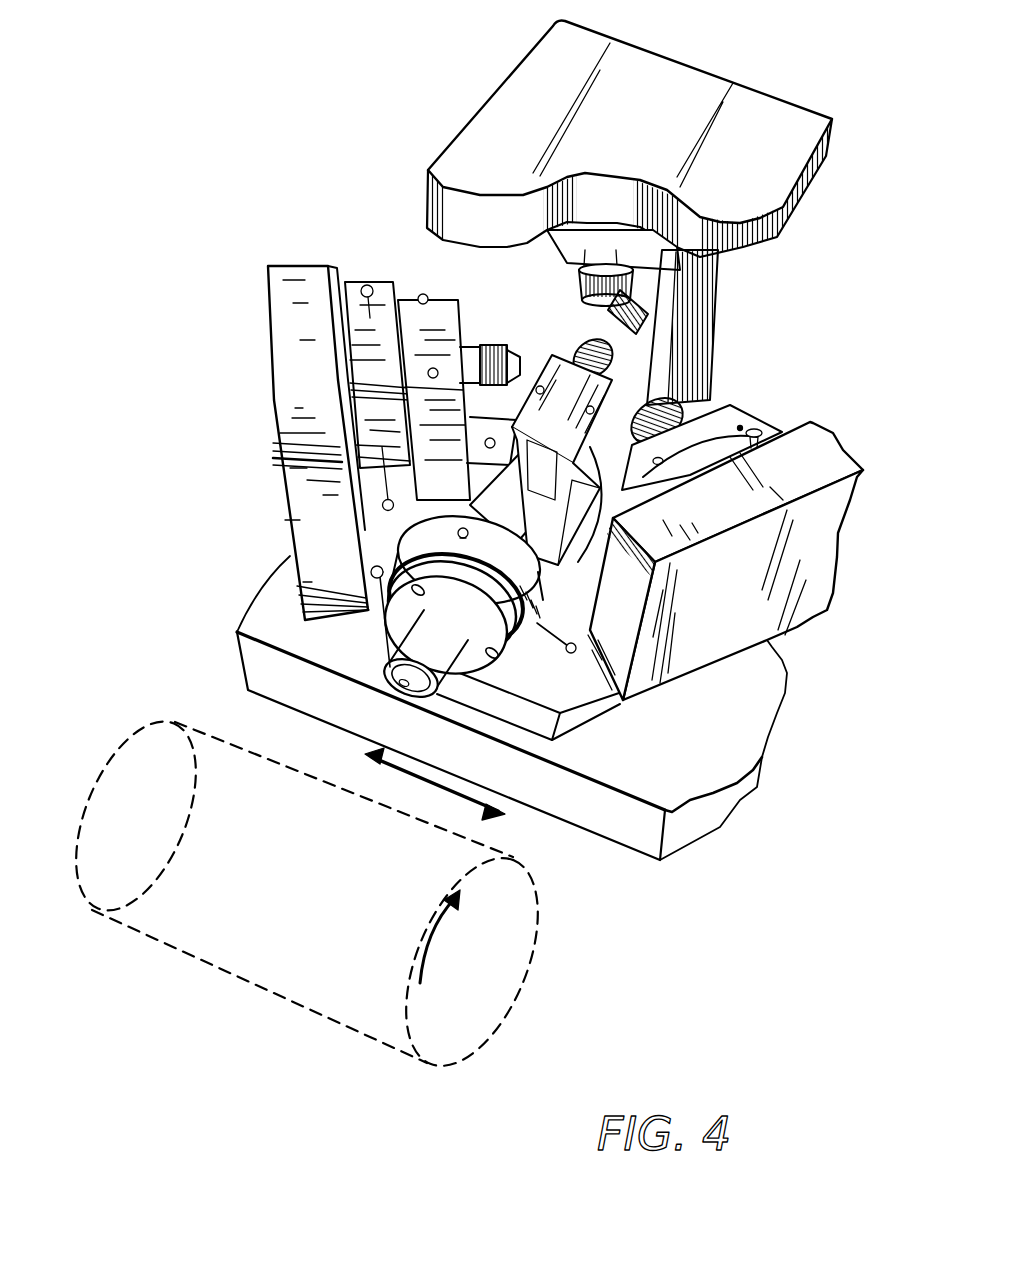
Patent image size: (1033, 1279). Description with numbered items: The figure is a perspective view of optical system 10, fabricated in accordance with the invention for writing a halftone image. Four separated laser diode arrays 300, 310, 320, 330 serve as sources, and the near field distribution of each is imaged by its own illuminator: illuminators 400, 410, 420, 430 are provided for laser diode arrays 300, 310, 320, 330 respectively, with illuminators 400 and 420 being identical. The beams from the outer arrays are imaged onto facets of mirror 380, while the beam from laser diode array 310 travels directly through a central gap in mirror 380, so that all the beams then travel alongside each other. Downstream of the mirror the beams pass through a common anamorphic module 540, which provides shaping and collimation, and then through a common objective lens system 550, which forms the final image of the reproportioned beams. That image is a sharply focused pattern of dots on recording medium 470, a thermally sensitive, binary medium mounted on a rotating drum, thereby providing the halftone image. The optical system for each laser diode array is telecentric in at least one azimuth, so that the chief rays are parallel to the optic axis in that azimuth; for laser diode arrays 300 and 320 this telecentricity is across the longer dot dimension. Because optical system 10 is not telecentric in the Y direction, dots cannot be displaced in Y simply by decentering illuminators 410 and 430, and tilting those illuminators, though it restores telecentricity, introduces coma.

The optical system 10 is at (322, 203).
The laser diode array 300 is at (232, 459).
The laser diode array 310 is at (754, 268).
The laser diode array 320 is at (799, 604).
The laser diode array 330 is at (697, 58).
The mirror 380 is at (592, 348).
The illuminator 400 is at (490, 345).
The illuminator 410 is at (702, 305).
The illuminator 420 is at (698, 410).
The illuminator 430 is at (580, 284).
The recording medium 470 is at (277, 930).
The anamorphic module 540 is at (540, 570).
The objective lens system 550 is at (528, 660).